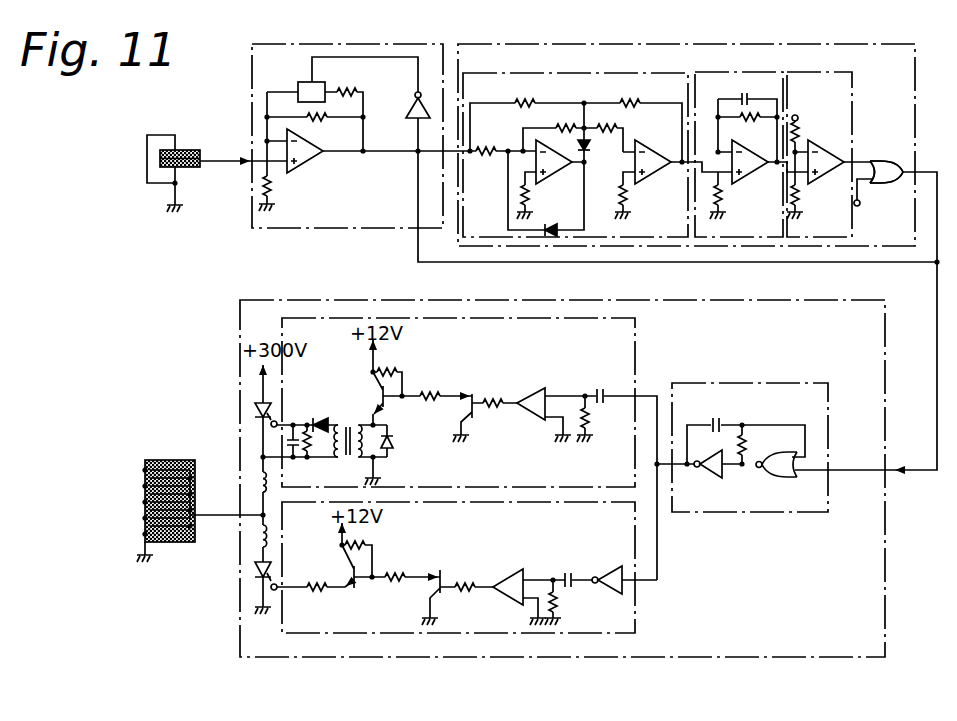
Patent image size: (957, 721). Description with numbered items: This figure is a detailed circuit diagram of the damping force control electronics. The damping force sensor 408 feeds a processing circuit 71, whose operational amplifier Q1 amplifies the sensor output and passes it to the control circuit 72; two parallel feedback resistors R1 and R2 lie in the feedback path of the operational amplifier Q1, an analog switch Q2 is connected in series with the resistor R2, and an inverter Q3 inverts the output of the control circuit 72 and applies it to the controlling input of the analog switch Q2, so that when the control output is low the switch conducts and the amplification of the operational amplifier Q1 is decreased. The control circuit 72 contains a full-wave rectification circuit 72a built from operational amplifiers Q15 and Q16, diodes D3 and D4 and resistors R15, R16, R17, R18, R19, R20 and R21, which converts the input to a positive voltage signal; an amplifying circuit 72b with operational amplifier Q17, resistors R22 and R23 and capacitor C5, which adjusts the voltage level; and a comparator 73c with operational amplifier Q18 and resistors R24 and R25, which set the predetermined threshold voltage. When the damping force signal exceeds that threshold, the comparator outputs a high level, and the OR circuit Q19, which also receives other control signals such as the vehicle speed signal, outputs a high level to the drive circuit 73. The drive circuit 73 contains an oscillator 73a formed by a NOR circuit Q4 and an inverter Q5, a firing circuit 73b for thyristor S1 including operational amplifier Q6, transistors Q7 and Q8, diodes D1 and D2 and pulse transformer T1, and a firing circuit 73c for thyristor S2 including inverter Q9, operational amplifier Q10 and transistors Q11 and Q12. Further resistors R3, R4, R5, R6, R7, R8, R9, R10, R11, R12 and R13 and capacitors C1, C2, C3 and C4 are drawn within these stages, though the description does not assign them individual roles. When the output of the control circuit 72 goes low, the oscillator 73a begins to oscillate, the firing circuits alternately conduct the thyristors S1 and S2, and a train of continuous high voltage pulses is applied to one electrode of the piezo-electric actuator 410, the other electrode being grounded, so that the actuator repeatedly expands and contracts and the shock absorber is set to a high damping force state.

The processing circuit 71 is at (350, 42).
The control circuit 72 is at (632, 42).
The full-wave rectification circuit 72a is at (530, 72).
The amplifying circuit 72b is at (713, 72).
The drive circuit 73 is at (722, 299).
The oscillator 73a is at (773, 382).
The firing circuit 73b is at (640, 332).
The comparator / firing circuit 73c is at (812, 72).
The damping force sensor 408 is at (190, 148).
The piezo-electric actuator 410 is at (172, 459).
The operational amplifier Q1 is at (300, 165).
The analog switch Q2 is at (304, 81).
The inverter Q3 is at (412, 106).
The NOR circuit Q4 is at (782, 477).
The inverter Q5 is at (706, 478).
The operational amplifier Q6 is at (531, 387).
The transistor Q7 is at (467, 392).
The transistor Q8 is at (378, 390).
The inverter Q9 is at (608, 566).
The operational amplifier Q10 is at (508, 570).
The transistor Q11 is at (442, 580).
The transistor Q12 is at (350, 572).
The operational amplifier Q15 is at (566, 176).
The operational amplifier Q16 is at (652, 153).
The operational amplifier Q17 is at (758, 176).
The operational amplifier Q18 is at (819, 141).
The OR circuit Q19 is at (885, 160).
The feedback resistor R1 is at (316, 119).
The feedback resistor R2 is at (352, 90).
The resistor R3 is at (750, 445).
The resistor R4 is at (590, 424).
The resistor R5 is at (493, 410).
The resistor R6 is at (428, 400).
The variable resistor R7 is at (386, 369).
The resistor R8 is at (560, 603).
The resistor R9 is at (465, 595).
The resistor R10 is at (392, 583).
The variable resistor R11 is at (365, 544).
The resistor R12 is at (316, 592).
The resistor R13 is at (311, 446).
The resistor R15 is at (484, 146).
The resistor R16 is at (520, 196).
The resistor R17 is at (520, 100).
The resistor R18 is at (566, 124).
The resistor R19 is at (604, 125).
The resistor R20 is at (628, 100).
The resistor R21 is at (630, 197).
The resistor R22 is at (727, 203).
The resistor R23 is at (745, 120).
The resistor R24 is at (799, 195).
The resistor R25 is at (797, 114).
The capacitor C1 is at (716, 416).
The capacitor C2 is at (597, 387).
The capacitor C3 is at (293, 458).
The capacitor C4 is at (565, 572).
The capacitor C5 is at (745, 94).
The diode D1 is at (394, 443).
The diode D2 is at (318, 418).
The diode D3 is at (588, 146).
The diode D4 is at (553, 227).
The pulse transformer T1 is at (345, 421).
The thyristor S1 is at (258, 410).
The thyristor S2 is at (269, 565).